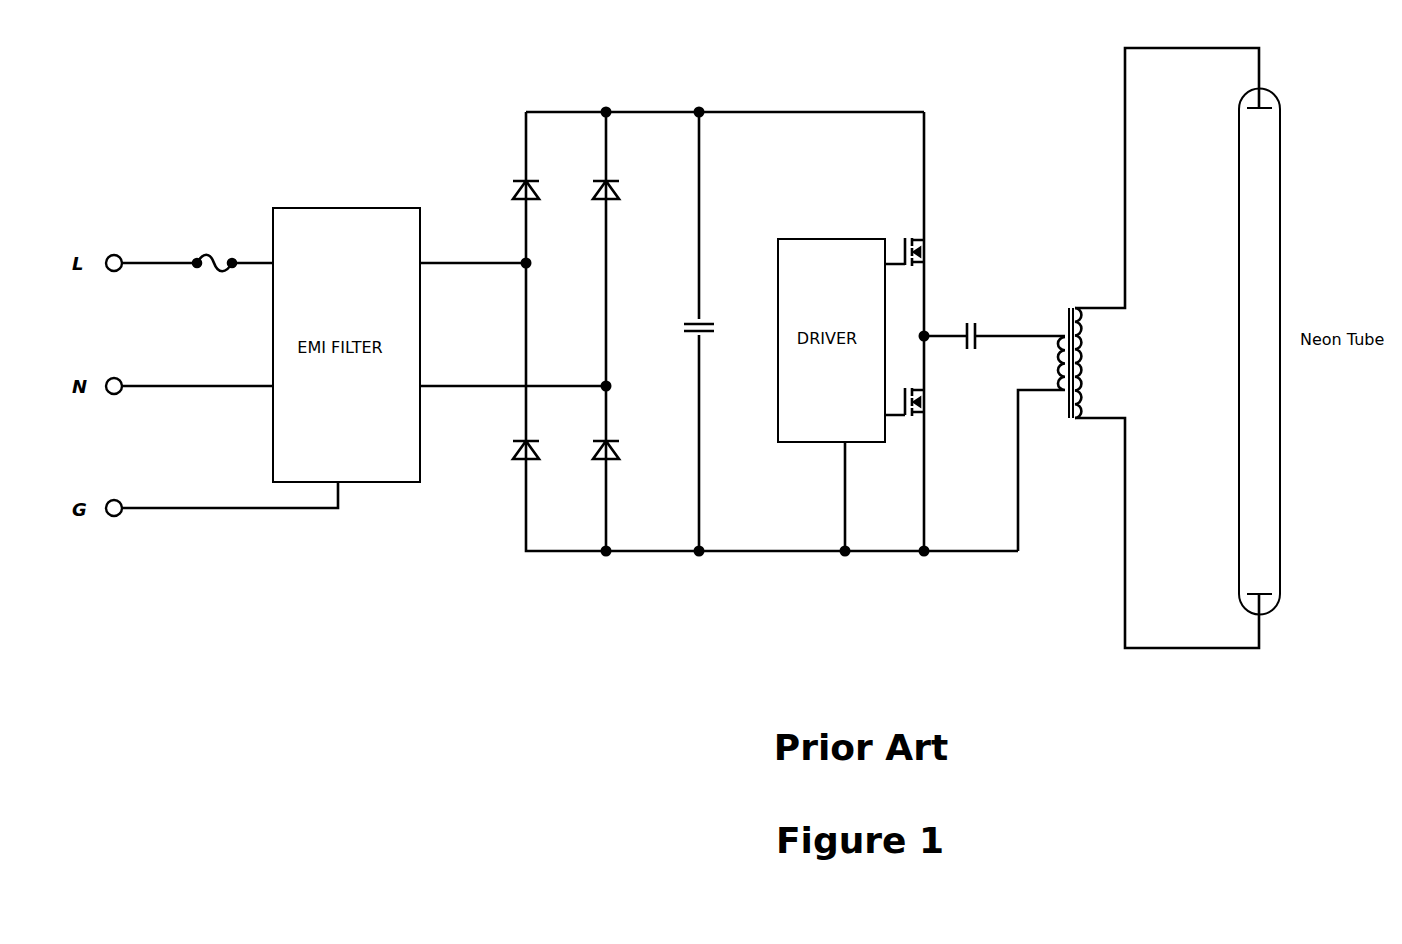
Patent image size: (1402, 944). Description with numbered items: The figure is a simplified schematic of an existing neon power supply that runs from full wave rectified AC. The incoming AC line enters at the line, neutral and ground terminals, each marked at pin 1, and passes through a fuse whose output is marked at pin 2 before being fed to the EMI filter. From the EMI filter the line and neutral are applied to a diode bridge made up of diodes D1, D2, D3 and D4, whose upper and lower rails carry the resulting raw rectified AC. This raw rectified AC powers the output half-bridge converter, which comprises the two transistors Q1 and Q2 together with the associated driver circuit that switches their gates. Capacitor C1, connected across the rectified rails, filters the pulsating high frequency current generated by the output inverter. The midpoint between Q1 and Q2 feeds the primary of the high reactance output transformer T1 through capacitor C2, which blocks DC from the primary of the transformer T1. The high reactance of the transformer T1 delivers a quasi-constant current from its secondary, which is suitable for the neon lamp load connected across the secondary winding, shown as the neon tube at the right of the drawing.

The input terminal pin 1 (L, N, G) 1 is at (222, 381).
The fuse output pin 2 is at (226, 245).
The diode D1 is at (506, 194).
The diode D2 is at (498, 453).
The diode D3 is at (624, 194).
The diode D4 is at (629, 453).
The capacitor C1 is at (680, 325).
The capacitor C2 is at (994, 319).
The transistor Q1 is at (924, 402).
The transistor Q2 is at (924, 252).
The high reactance output transformer T1 is at (1138, 348).